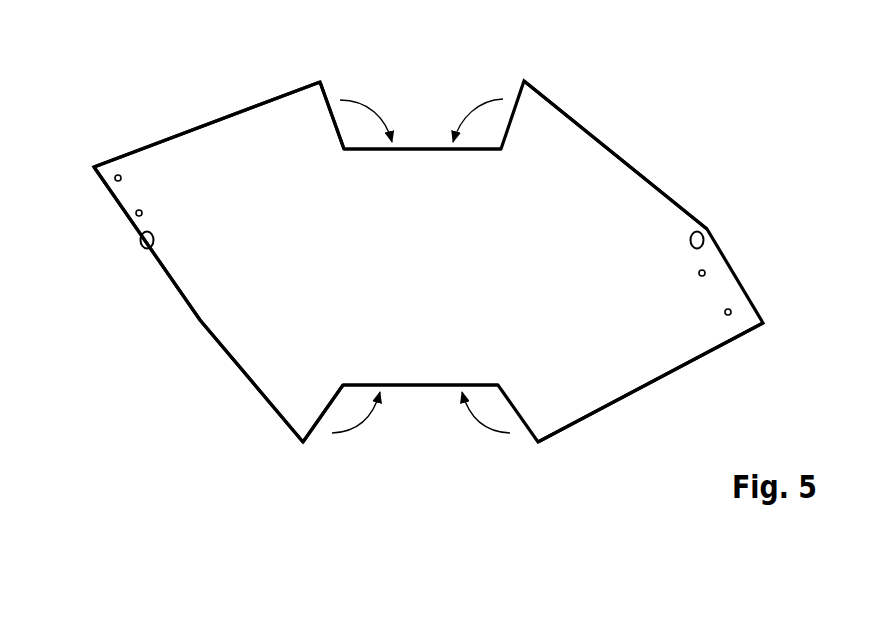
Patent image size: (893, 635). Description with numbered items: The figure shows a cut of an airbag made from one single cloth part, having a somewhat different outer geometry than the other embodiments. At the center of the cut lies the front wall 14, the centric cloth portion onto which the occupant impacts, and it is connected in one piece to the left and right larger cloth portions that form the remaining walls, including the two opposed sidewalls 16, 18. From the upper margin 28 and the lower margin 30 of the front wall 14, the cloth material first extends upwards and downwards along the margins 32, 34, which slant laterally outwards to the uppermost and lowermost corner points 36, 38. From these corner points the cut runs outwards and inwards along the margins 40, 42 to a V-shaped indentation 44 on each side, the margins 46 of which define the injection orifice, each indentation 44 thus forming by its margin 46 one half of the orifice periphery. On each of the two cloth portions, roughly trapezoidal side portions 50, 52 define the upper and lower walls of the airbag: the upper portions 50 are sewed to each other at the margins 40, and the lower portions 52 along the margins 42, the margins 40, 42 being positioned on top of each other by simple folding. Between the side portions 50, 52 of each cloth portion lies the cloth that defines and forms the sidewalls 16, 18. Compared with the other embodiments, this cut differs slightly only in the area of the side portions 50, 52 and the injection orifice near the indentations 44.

The front wall 14 is at (433, 268).
The sidewall 16 is at (282, 268).
The sidewall 18 is at (562, 268).
The upper margin 28 is at (424, 148).
The lower margin 30 is at (422, 386).
The margin 32 is at (326, 90).
The margin 34 is at (311, 436).
The uppermost corner point 36 is at (320, 80).
The lowermost corner point 38 is at (302, 445).
The margin 40 is at (207, 123).
The margin 42 is at (204, 326).
The V-shaped indentation 44 is at (118, 230).
The margin of the V-shaped indentation 46 is at (105, 193).
The upper portion 50 is at (252, 120).
The lower portion 52 is at (241, 350).